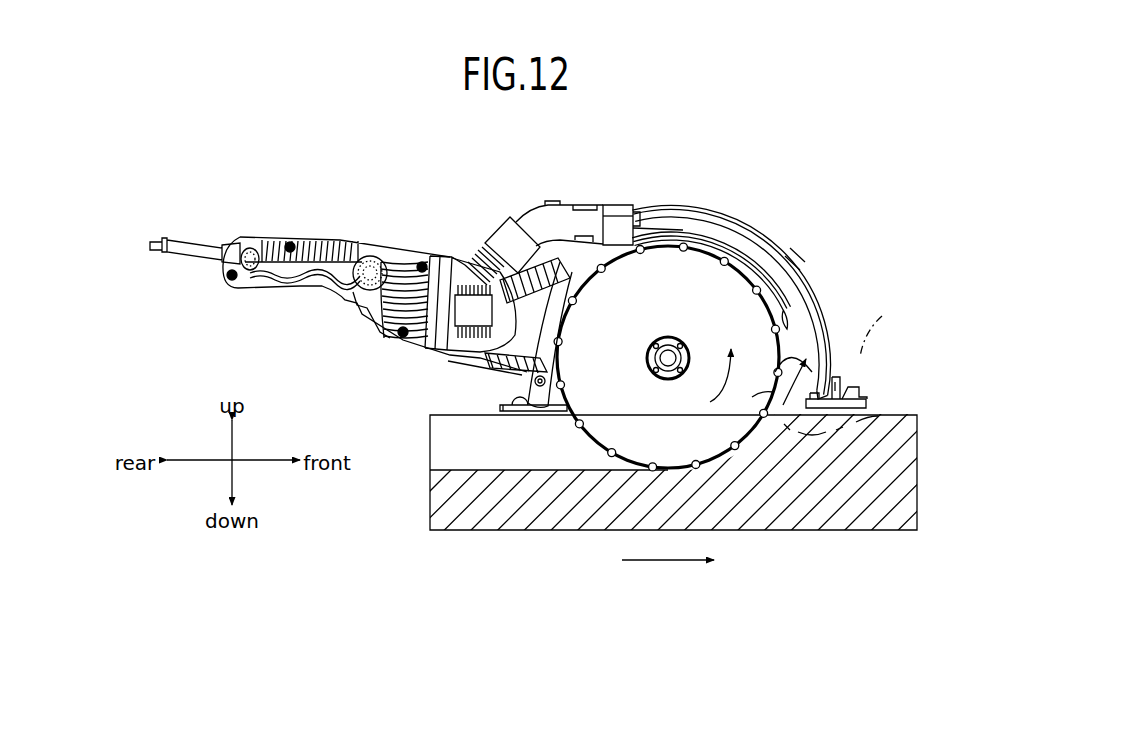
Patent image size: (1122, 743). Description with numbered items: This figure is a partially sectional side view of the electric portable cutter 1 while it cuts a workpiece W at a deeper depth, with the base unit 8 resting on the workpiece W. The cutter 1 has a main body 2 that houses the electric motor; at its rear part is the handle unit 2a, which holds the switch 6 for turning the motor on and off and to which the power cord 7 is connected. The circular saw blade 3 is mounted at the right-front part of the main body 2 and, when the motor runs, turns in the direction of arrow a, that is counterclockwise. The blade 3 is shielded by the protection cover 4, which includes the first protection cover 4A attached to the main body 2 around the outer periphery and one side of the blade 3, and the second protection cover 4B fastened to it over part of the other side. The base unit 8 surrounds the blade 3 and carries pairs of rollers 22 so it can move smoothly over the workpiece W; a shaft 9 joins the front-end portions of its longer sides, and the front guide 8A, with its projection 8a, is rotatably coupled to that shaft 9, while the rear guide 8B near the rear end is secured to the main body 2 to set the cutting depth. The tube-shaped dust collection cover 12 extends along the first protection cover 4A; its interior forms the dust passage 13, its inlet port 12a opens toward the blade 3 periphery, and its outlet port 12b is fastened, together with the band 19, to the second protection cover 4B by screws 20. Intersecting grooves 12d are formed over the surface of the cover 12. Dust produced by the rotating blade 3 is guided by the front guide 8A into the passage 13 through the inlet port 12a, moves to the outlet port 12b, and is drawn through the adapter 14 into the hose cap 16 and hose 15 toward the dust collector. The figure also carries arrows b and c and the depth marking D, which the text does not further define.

The electric portable cutter 1 is at (522, 332).
The main body 2 is at (420, 351).
The handle unit 2a is at (258, 240).
The circular saw blade 3 is at (584, 437).
The protection cover 4 is at (711, 229).
The first protection cover 4A is at (730, 240).
The second protection cover 4B is at (690, 236).
The switch 6 is at (317, 291).
The power cord 7 is at (149, 236).
The base unit 8 is at (877, 362).
The projection 8a is at (878, 397).
The front guide 8A is at (747, 395).
The rear guide 8B is at (520, 383).
The shaft 9 is at (837, 378).
The dust collection cover 12 is at (770, 245).
The inlet port 12a is at (806, 332).
The outlet port 12b is at (648, 258).
The grooves 12d is at (806, 258).
The dust passage 13 is at (762, 247).
The adapter 14 is at (553, 199).
The hose 15 is at (482, 256).
The hose cap 16 is at (490, 225).
The band 19 is at (618, 203).
The screws 20 is at (610, 246).
The rollers 22 is at (498, 405).
The workpiece W is at (426, 515).
The arrow a is at (722, 361).
The cutting feed direction b is at (678, 562).
The dust flow direction c is at (793, 368).
The cutting depth D is at (882, 325).